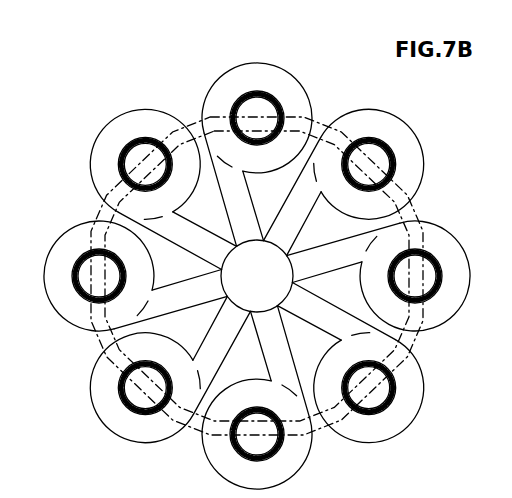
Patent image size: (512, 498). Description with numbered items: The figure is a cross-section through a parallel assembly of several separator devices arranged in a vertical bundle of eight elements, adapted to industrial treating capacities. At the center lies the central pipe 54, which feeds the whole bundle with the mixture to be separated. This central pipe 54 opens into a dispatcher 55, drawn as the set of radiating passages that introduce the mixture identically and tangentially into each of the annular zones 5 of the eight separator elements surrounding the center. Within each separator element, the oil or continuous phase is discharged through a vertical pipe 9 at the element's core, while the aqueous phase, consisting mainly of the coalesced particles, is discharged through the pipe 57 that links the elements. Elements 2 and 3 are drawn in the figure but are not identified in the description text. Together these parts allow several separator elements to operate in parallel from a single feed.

The extrusion die body 2 is at (405, 121).
The bore sleeve 3 is at (393, 157).
The annular zone 5 is at (408, 185).
The vertical pipe 9 is at (373, 150).
The central pipe 54 is at (272, 291).
The dispatcher 55 is at (396, 337).
The discharge pipe 57 is at (197, 132).